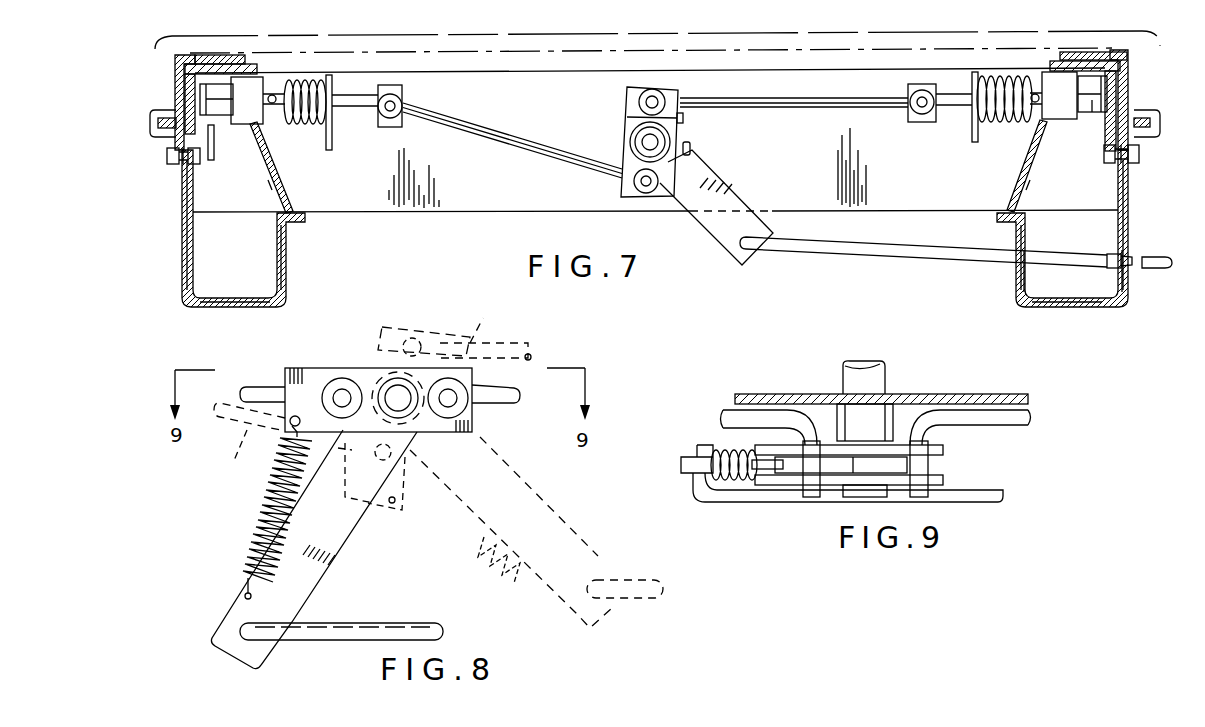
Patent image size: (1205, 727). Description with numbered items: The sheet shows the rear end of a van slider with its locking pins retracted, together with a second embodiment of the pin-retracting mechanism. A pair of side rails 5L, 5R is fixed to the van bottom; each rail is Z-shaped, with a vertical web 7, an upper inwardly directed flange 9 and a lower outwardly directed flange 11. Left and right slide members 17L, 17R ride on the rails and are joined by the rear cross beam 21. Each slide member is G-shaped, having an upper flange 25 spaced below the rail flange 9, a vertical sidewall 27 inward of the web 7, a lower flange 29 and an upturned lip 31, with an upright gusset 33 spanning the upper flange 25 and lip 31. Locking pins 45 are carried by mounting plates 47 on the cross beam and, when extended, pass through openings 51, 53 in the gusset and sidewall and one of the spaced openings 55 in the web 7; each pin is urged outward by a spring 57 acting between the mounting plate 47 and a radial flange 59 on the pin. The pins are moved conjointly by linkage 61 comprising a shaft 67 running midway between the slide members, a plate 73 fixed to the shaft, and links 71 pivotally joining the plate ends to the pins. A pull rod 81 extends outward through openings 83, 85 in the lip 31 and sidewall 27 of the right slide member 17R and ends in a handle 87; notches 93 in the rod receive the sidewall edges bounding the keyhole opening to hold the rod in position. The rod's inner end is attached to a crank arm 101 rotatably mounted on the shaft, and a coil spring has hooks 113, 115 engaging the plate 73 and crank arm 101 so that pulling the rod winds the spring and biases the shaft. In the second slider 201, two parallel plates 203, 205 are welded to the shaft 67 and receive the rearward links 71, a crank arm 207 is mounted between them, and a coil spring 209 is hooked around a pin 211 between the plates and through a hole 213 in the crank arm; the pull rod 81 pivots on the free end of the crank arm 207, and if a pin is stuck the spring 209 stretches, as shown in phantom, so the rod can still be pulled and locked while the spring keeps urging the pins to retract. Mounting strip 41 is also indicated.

In FIG. 7, the left side rail 5L is at (170, 62).
In FIG. 7, the right side rail 5R is at (1136, 58).
In FIG. 7, the vertical web 7 is at (186, 80).
In FIG. 7, the upper inwardly directed horizontal flange 9 is at (214, 55).
In FIG. 7, the lower outwardly directed flange 11 is at (168, 152).
In FIG. 7, the left slide member 17L is at (176, 266).
In FIG. 7, the right slide member 17R is at (1132, 206).
In FIG. 7, the rear cross beam 21 is at (812, 151).
In FIG. 9, the rear cross beam 21 is at (1012, 396).
In FIG. 7, the upper inwardly-directed horizontal flange 25 is at (260, 67).
In FIG. 7, the sidewall 27 is at (181, 228).
In FIG. 7, the lower inwardly directed horizontal flange 29 is at (232, 309).
In FIG. 7, the lip 31 is at (285, 268).
In FIG. 7, the reinforcing gusset 33 is at (280, 182).
In FIG. 7, the mounting strip 41 is at (236, 56).
In FIG. 7, the locking pin 45 is at (222, 110).
In FIG. 7, the mounting plate 47 is at (331, 145).
In FIG. 7, the opening in gusset 51 is at (250, 128).
In FIG. 7, the opening in sidewall 53 is at (212, 150).
In FIG. 7, the openings in web 55 is at (152, 112).
In FIG. 7, the spring 57 is at (310, 90).
In FIG. 7, the radial flange 59 is at (256, 87).
In FIG. 7, the linkage 61 is at (612, 113).
In FIG. 7, the shaft 67 is at (640, 141).
In FIG. 8, the shaft 67 is at (392, 388).
In FIG. 9, the shaft 67 is at (868, 386).
In FIG. 7, the link 71 is at (508, 137).
In FIG. 8, the link 71 is at (266, 387).
In FIG. 9, the link 71 is at (1032, 416).
In FIG. 7, the plate 73 is at (660, 92).
In FIG. 7, the pull rod 81 is at (876, 256).
In FIG. 8, the pull rod 81 is at (430, 622).
In FIG. 9, the pull rod 81 is at (968, 498).
In FIG. 7, the opening in lip 83 is at (1020, 278).
In FIG. 7, the opening in sidewall 85 is at (1126, 282).
In FIG. 7, the handle 87 is at (1172, 264).
In FIG. 7, the notches 93 is at (1125, 255).
In FIG. 7, the crank arm 101 is at (712, 226).
In FIG. 7, the hook 113 is at (684, 118).
In FIG. 7, the hook 115 is at (690, 149).
In FIG. 8, the slider 201 is at (540, 352).
In FIG. 9, the slider 201 is at (1012, 440).
In FIG. 8, the elongate plate 203 is at (392, 327).
In FIG. 9, the elongate plate 203 is at (944, 479).
In FIG. 9, the elongate plate 205 is at (944, 448).
In FIG. 8, the crank arm 207 is at (332, 548).
In FIG. 9, the crank arm 207 is at (795, 468).
In FIG. 8, the coil spring 209 is at (262, 513).
In FIG. 9, the coil spring 209 is at (730, 480).
In FIG. 8, the pin 211 is at (292, 430).
In FIG. 9, the pin 211 is at (770, 475).
In FIG. 8, the hole 213 is at (246, 594).